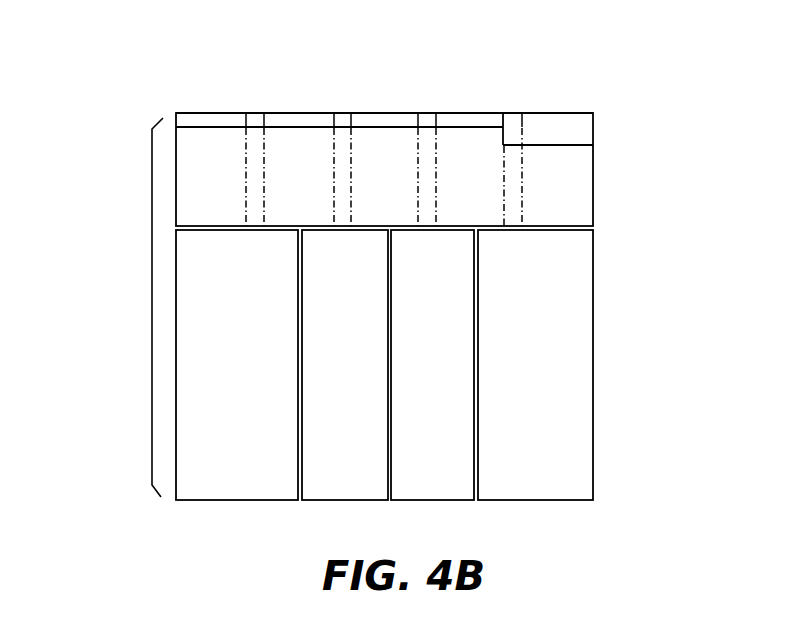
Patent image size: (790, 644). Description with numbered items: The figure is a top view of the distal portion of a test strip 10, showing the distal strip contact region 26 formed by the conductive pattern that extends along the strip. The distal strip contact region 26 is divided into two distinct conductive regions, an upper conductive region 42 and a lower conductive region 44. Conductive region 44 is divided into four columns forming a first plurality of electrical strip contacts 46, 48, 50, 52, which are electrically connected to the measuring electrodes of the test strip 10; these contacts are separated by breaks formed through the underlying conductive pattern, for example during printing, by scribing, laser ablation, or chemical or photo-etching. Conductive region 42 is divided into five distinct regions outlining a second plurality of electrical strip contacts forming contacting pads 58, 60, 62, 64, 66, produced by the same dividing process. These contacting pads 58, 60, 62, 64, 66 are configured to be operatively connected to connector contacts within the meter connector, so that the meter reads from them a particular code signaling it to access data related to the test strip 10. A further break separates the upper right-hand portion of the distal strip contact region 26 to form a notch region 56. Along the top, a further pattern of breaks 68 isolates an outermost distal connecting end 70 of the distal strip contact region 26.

The test strip 10 is at (134, 100).
The distal strip contact region 26 is at (150, 293).
The conductive region 42 is at (607, 113).
The conductive region 44 is at (607, 232).
The electrical strip contact 46 is at (237, 365).
The electrical strip contact 48 is at (345, 365).
The electrical strip contact 50 is at (432, 365).
The electrical strip contact 52 is at (535, 365).
The notch region 56 is at (530, 129).
The contacting pad 58 is at (211, 176).
The contacting pad 60 is at (299, 176).
The contacting pad 62 is at (384, 176).
The contacting pad 64 is at (469, 176).
The contacting pad 66 is at (548, 165).
The breaks 68 is at (357, 124).
The outermost distal connecting end 70 is at (476, 116).